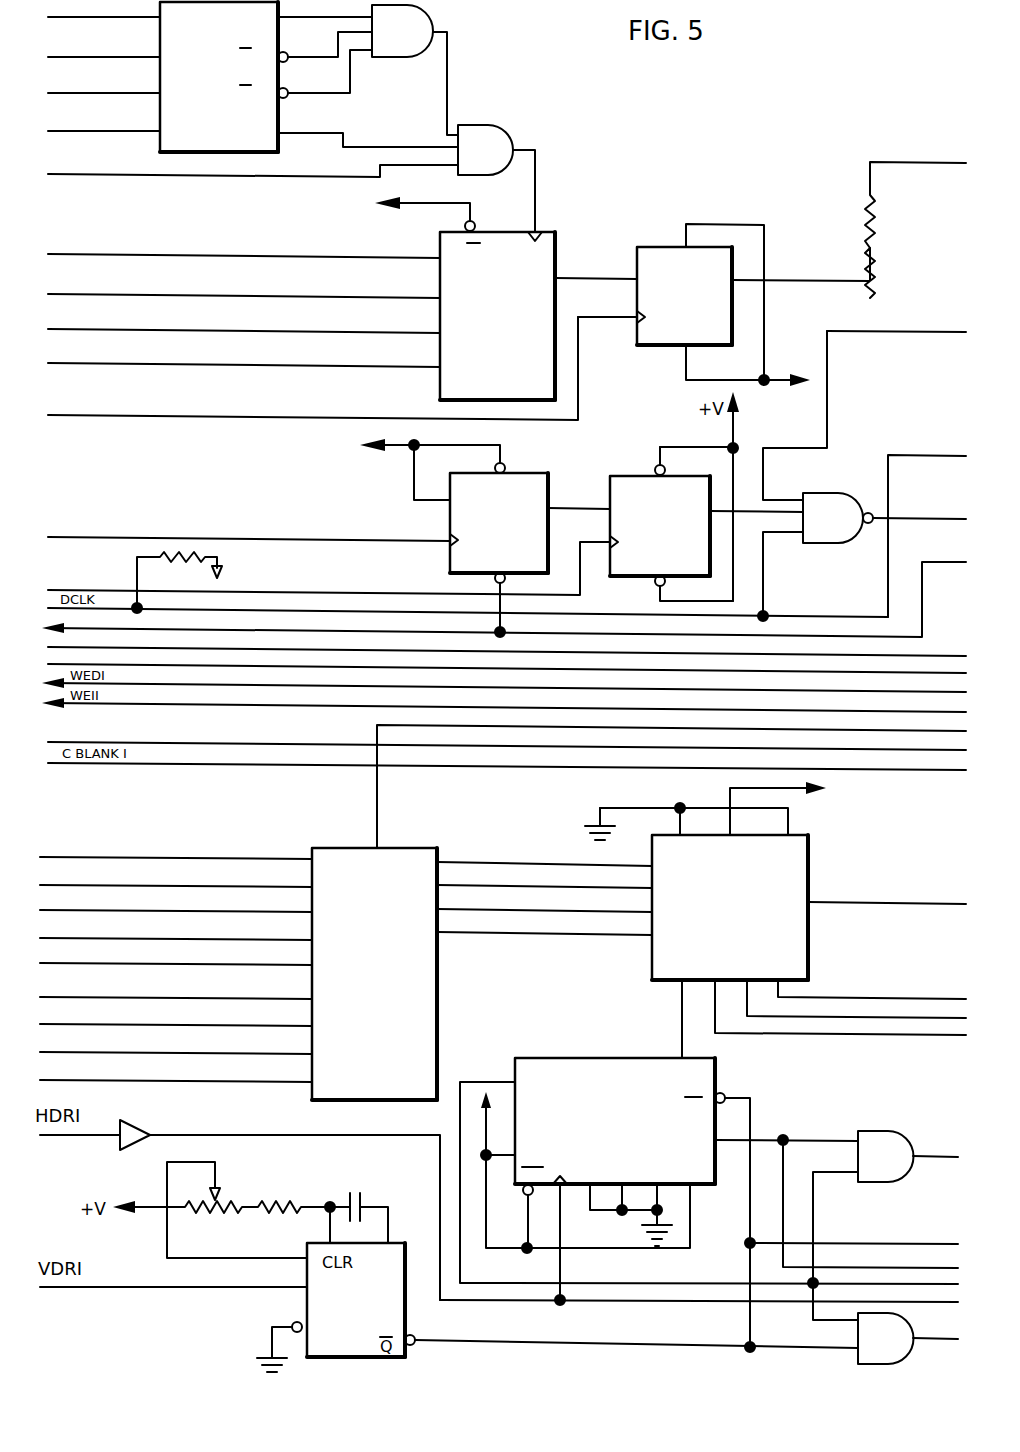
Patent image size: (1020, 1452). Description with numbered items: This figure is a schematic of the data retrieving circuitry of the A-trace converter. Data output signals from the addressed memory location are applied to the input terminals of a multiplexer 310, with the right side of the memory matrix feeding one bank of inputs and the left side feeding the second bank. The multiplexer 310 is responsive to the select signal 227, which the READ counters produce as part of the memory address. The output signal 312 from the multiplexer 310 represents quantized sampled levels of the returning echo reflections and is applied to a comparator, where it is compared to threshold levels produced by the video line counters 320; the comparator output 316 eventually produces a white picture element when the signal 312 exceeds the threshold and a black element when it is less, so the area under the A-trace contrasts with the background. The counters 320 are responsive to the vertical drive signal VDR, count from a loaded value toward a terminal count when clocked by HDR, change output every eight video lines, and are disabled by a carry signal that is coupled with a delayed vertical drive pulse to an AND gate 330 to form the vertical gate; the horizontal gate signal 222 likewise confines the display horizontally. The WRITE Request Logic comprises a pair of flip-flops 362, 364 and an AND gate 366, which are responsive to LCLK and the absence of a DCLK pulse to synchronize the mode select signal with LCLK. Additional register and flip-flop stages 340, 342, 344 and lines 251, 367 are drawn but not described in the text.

The quad latch 342 is at (265, 238).
The four-bit register 340 is at (562, 238).
The flip-flop 344 is at (638, 340).
The flip-flop 362 is at (532, 476).
The flip-flop 364 is at (624, 476).
The AND gate 366 is at (836, 498).
The ABWI line 367 is at (270, 628).
The control line 251 is at (305, 668).
The horizontal gate signal 222 is at (250, 742).
The multiplexer 310 is at (437, 1062).
The select signal 227 is at (195, 963).
The output signal 312 is at (581, 948).
The comparator output 316 is at (866, 902).
The video line counters 320 is at (752, 1076).
The AND gate 330 is at (858, 1358).